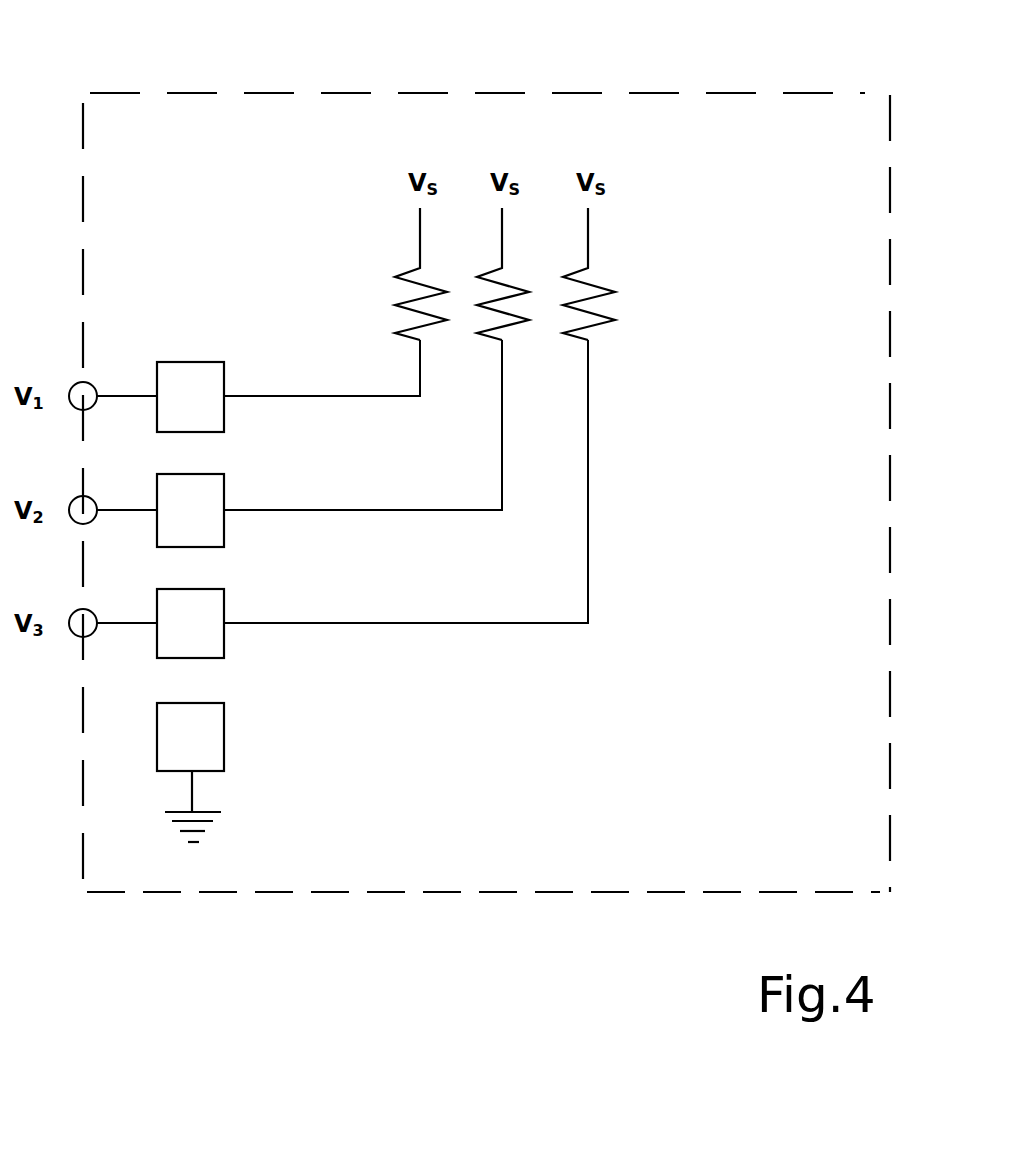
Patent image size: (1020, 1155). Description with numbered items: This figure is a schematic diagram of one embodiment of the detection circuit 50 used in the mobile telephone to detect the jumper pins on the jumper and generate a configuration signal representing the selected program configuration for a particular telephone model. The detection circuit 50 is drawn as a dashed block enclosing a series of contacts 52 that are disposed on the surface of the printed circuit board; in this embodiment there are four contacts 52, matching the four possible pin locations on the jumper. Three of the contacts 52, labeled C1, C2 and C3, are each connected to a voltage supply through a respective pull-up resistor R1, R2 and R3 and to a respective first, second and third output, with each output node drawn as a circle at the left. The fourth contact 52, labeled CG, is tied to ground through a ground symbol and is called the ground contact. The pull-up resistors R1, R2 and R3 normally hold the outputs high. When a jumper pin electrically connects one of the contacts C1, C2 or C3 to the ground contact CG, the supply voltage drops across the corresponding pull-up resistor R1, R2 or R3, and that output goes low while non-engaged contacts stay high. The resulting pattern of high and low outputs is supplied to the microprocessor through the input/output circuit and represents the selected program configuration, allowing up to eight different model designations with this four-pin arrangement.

The detection circuit 50 is at (605, 93).
The contacts 52 is at (229, 568).
The pull-up resistor R1 is at (426, 288).
The pull-up resistor R2 is at (508, 288).
The pull-up resistor R3 is at (593, 288).
The contact C1 is at (190, 397).
The contact C2 is at (190, 510).
The contact C3 is at (190, 623).
The ground contact CG is at (190, 772).